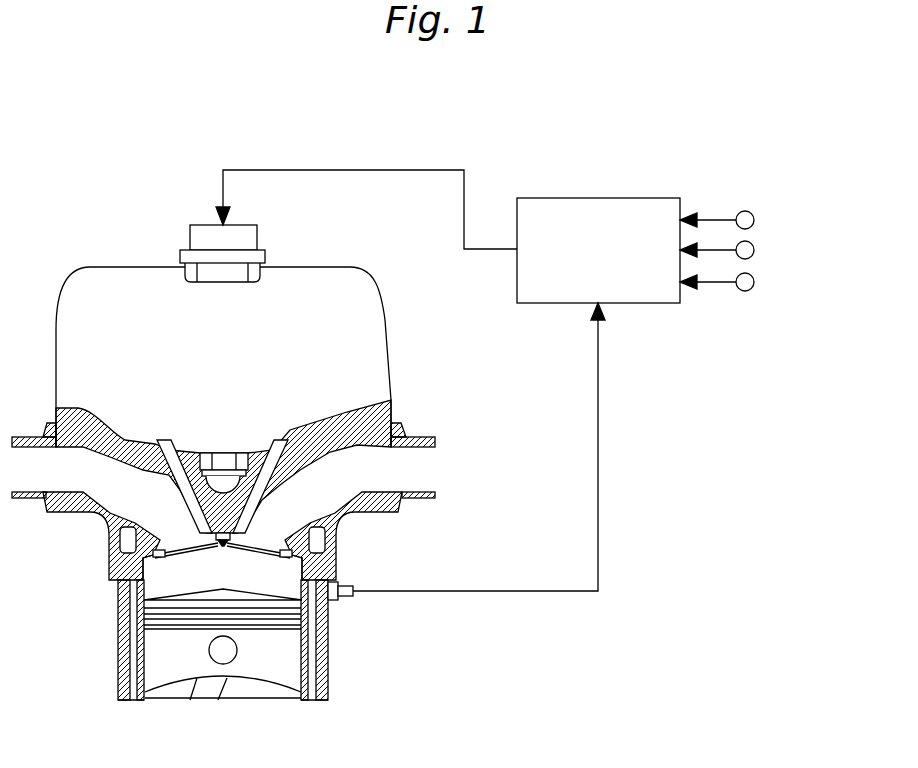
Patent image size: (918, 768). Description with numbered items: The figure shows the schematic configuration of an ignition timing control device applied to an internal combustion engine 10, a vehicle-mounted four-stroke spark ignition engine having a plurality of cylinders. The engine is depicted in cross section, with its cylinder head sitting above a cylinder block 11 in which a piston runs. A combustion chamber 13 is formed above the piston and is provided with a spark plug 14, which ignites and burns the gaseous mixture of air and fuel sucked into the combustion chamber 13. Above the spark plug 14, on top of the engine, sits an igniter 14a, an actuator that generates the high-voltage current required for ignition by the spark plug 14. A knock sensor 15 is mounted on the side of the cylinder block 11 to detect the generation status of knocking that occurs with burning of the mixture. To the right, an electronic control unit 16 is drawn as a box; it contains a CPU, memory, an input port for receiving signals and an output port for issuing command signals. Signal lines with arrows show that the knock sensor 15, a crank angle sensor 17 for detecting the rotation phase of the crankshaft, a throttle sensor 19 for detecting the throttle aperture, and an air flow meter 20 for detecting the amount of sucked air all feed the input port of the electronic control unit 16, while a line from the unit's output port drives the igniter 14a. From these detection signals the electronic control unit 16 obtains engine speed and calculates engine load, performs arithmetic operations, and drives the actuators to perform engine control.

The internal combustion engine 10 is at (223, 435).
The cylinder block 11 is at (328, 647).
The combustion chamber 13 is at (184, 590).
The spark plug 14 is at (226, 546).
The igniter 14a is at (258, 238).
The knock sensor 15 is at (345, 584).
The electronic control unit 16 is at (549, 198).
The crank angle sensor 17 is at (754, 220).
The throttle sensor 19 is at (754, 250).
The air flow meter 20 is at (754, 282).